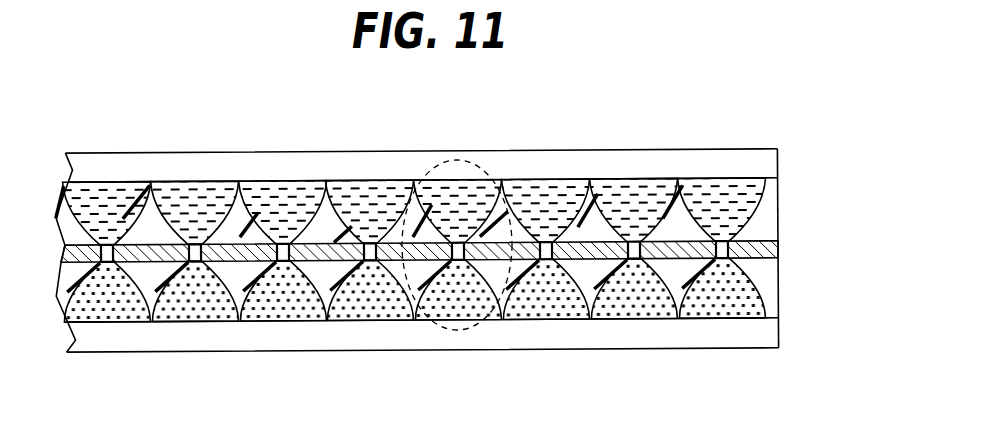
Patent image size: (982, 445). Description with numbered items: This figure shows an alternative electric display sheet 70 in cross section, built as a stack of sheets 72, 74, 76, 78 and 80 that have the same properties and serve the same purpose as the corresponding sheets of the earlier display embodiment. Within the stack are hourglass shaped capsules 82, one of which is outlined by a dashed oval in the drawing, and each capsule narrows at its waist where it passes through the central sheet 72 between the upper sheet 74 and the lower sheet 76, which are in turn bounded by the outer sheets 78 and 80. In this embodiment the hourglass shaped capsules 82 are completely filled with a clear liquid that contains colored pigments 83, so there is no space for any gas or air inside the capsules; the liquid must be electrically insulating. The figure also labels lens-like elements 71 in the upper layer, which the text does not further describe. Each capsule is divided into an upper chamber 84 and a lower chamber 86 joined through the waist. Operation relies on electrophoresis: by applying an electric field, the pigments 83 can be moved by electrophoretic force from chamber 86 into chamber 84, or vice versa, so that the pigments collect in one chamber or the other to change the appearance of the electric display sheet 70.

The electric display sheet 70 is at (666, 128).
The lens elements 71 is at (273, 207).
The sheet 72 is at (778, 245).
The sheet 74 is at (778, 198).
The sheet 76 is at (778, 285).
The sheet 78 is at (778, 158).
The sheet 80 is at (778, 332).
The hourglass shaped capsule 82 is at (459, 160).
The pigments 83 is at (280, 307).
The chamber 84 is at (146, 192).
The chamber 86 is at (587, 287).